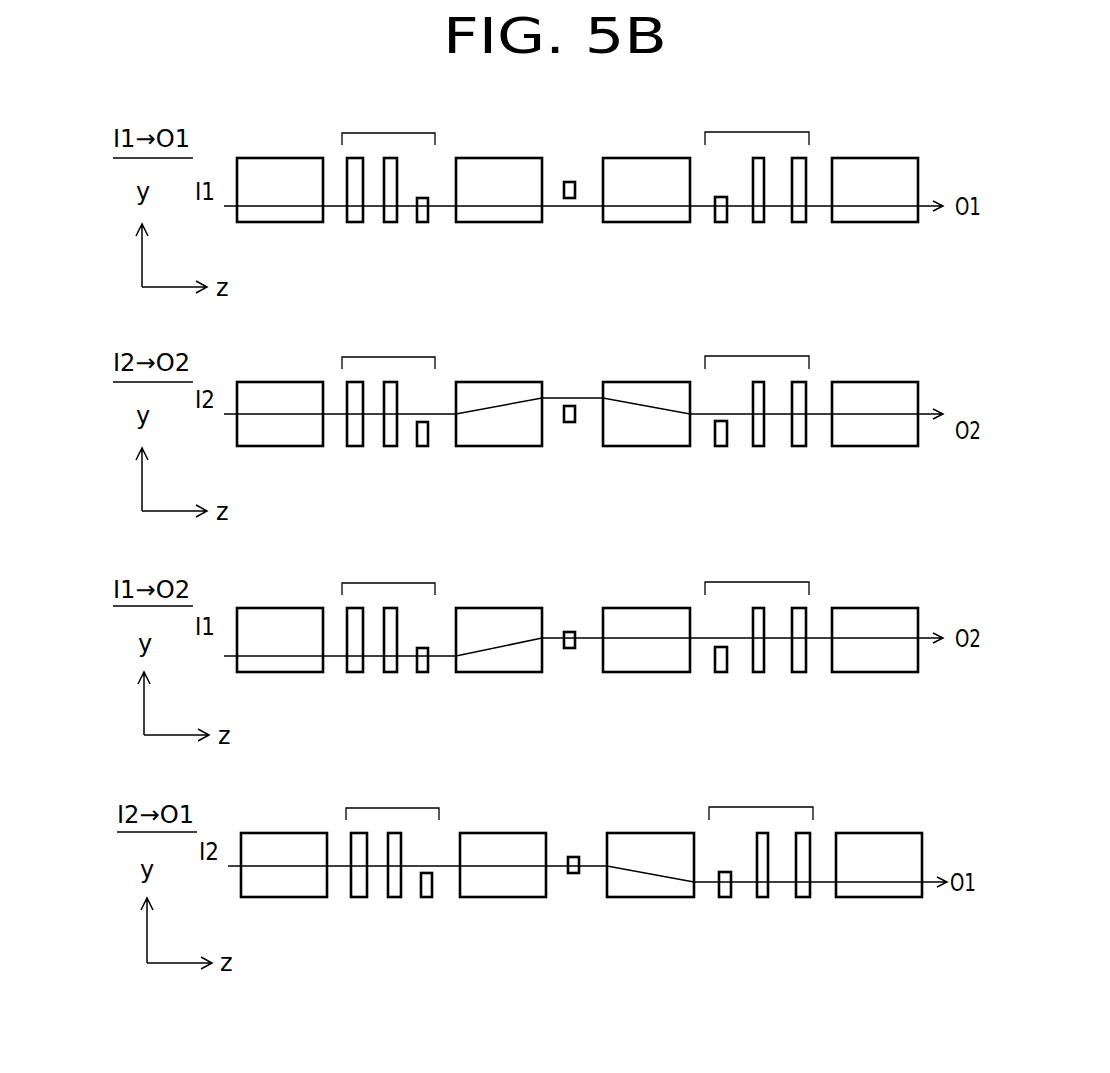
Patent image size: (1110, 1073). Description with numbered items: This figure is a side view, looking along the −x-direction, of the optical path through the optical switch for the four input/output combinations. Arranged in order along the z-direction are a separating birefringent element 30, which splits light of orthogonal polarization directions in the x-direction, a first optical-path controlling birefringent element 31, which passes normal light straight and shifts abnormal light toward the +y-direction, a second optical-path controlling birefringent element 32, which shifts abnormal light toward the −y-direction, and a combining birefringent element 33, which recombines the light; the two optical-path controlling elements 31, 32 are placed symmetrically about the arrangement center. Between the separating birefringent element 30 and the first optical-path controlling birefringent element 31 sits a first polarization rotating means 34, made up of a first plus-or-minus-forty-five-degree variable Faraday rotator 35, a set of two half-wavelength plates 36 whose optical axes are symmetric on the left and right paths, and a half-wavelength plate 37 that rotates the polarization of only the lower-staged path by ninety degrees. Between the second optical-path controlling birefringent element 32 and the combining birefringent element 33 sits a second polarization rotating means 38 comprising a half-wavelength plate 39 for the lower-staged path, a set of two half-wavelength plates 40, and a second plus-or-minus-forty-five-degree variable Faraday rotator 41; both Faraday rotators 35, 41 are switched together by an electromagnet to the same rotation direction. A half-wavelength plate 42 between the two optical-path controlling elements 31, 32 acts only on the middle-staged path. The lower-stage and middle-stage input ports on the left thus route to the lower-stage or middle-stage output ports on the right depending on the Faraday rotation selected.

The separating birefringent element 30 is at (282, 497).
The first optical-path controlling birefringent element 31 is at (501, 497).
The second optical-path controlling birefringent element 32 is at (648, 497).
The combining birefringent element 33 is at (877, 497).
The first polarization rotating means 34 is at (390, 459).
The first ±45-degree variable Faraday rotator 35 is at (349, 555).
The set of two ½-wavelength plates 36 is at (392, 557).
The ½-wavelength plate 37 is at (434, 575).
The second polarization rotating means 38 is at (759, 459).
The ½-wavelength plate 39 is at (717, 575).
The set of two ½-wavelength plates 40 is at (757, 555).
The second ±45-degree variable Faraday rotator 41 is at (797, 555).
The ½-wavelength plate 42 is at (565, 485).